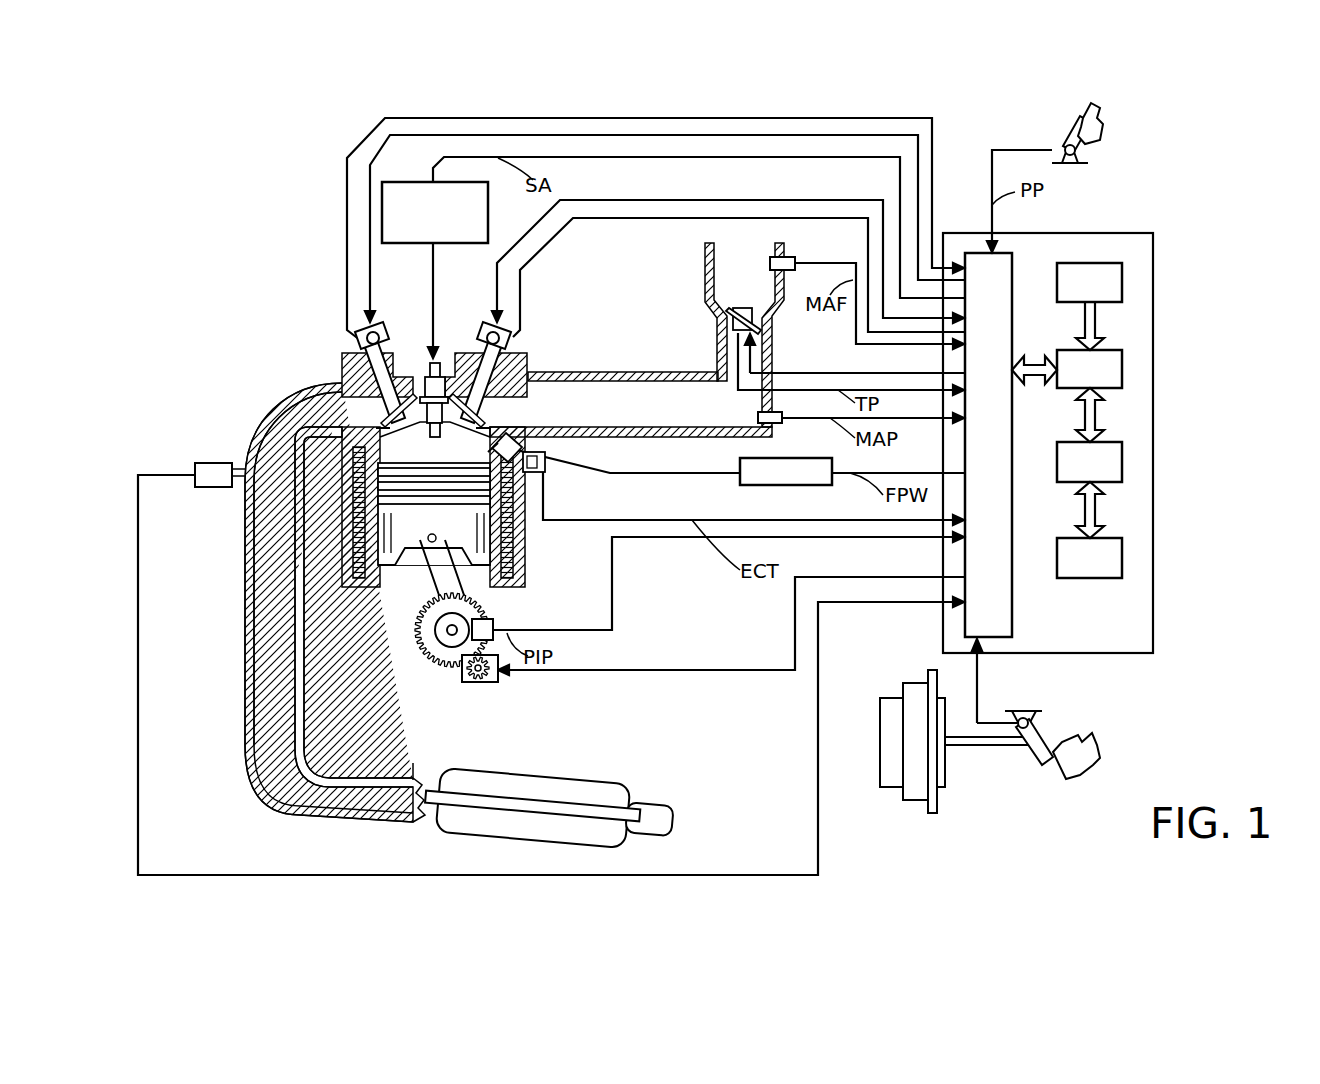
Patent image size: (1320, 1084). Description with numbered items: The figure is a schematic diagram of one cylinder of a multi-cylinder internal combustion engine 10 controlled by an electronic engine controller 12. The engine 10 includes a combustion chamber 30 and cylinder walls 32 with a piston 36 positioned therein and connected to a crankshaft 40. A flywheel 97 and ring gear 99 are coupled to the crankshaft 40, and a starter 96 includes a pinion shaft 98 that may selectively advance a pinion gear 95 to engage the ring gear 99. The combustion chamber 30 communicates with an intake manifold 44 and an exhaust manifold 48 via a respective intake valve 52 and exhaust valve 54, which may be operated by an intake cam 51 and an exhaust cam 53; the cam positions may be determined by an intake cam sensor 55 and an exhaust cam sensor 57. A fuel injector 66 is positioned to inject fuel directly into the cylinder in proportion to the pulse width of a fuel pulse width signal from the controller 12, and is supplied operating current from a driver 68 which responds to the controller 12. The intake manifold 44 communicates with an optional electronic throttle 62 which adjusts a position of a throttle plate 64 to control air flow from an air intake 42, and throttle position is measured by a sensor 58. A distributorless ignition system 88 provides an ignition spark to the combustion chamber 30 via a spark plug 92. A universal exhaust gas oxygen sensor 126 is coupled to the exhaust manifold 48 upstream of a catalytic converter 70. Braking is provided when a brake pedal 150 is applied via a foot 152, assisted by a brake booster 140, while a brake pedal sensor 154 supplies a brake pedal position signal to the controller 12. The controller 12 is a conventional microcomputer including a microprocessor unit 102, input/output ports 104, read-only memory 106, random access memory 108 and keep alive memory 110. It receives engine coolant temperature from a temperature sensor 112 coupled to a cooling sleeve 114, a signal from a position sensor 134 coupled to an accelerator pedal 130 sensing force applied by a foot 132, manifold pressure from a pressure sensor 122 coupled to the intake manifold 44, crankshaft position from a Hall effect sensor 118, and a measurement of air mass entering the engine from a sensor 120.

The internal combustion engine 10 is at (275, 308).
The electronic engine controller 12 is at (1140, 233).
The combustion chamber 30 is at (433, 445).
The cylinder walls 32 is at (380, 575).
The piston 36 is at (418, 540).
The crankshaft 40 is at (440, 656).
The air intake 42 is at (744, 335).
The intake manifold 44 is at (631, 404).
The exhaust manifold 48 is at (329, 602).
The intake cam 51 is at (486, 322).
The intake valve 52 is at (470, 413).
The exhaust cam 53 is at (378, 322).
The exhaust valve 54 is at (380, 418).
The intake cam sensor 55 is at (509, 340).
The exhaust cam sensor 57 is at (357, 338).
The throttle position sensor 58 is at (714, 340).
The electronic throttle 62 is at (762, 315).
The throttle plate 64 is at (733, 316).
The fuel injector 66 is at (512, 452).
The driver 68 is at (763, 486).
The catalytic converter 70 is at (452, 775).
The distributorless ignition system 88 is at (397, 182).
The spark plug 92 is at (440, 360).
The pinion gear 95 is at (488, 685).
The starter 96 is at (498, 680).
The flywheel 97 is at (424, 640).
The pinion shaft 98 is at (470, 683).
The ring gear 99 is at (450, 670).
The microprocessor unit 102 is at (1122, 370).
The input/output ports 104 is at (1013, 263).
The read-only memory 106 is at (1122, 280).
The random access memory 108 is at (1122, 462).
The keep alive memory 110 is at (1122, 557).
The temperature sensor 112 is at (545, 473).
The cooling sleeve 114 is at (513, 540).
The Hall effect sensor 118 is at (493, 620).
The air mass sensor 120 is at (786, 258).
The pressure sensor 122 is at (780, 424).
The Universal Exhaust Gas Oxygen sensor 126 is at (198, 466).
The accelerator pedal 130 is at (1055, 133).
The foot 132 is at (1100, 116).
The position sensor 134 is at (1088, 152).
The brake booster 140 is at (880, 790).
The brake pedal 150 is at (1050, 765).
The foot 152 is at (1080, 736).
The brake pedal sensor 154 is at (1017, 721).